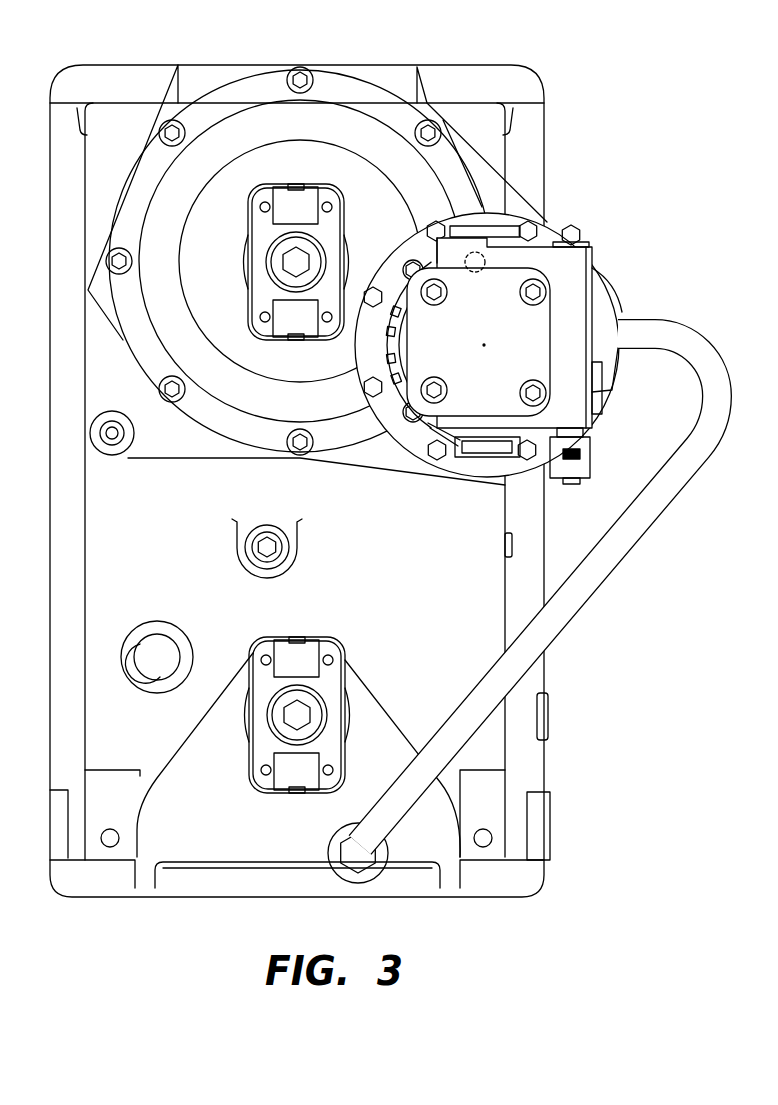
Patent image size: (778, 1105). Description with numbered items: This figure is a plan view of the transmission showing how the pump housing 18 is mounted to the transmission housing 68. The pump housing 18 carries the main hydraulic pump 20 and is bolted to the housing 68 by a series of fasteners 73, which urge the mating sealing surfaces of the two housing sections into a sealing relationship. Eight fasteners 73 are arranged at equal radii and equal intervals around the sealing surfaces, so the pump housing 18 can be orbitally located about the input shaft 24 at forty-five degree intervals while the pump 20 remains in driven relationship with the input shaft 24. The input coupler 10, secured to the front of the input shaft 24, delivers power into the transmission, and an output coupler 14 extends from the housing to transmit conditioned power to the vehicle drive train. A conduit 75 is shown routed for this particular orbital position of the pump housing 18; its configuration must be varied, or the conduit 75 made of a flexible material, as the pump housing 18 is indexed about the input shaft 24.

The input coupler 10 is at (260, 213).
The output coupler 14 is at (253, 747).
The pump housing section 18 is at (357, 123).
The main hydraulic pump 20 is at (587, 263).
The input shaft 24 is at (317, 257).
The transmission housing 68 is at (545, 133).
The fasteners 73 is at (299, 66).
The conduit 75 is at (628, 553).